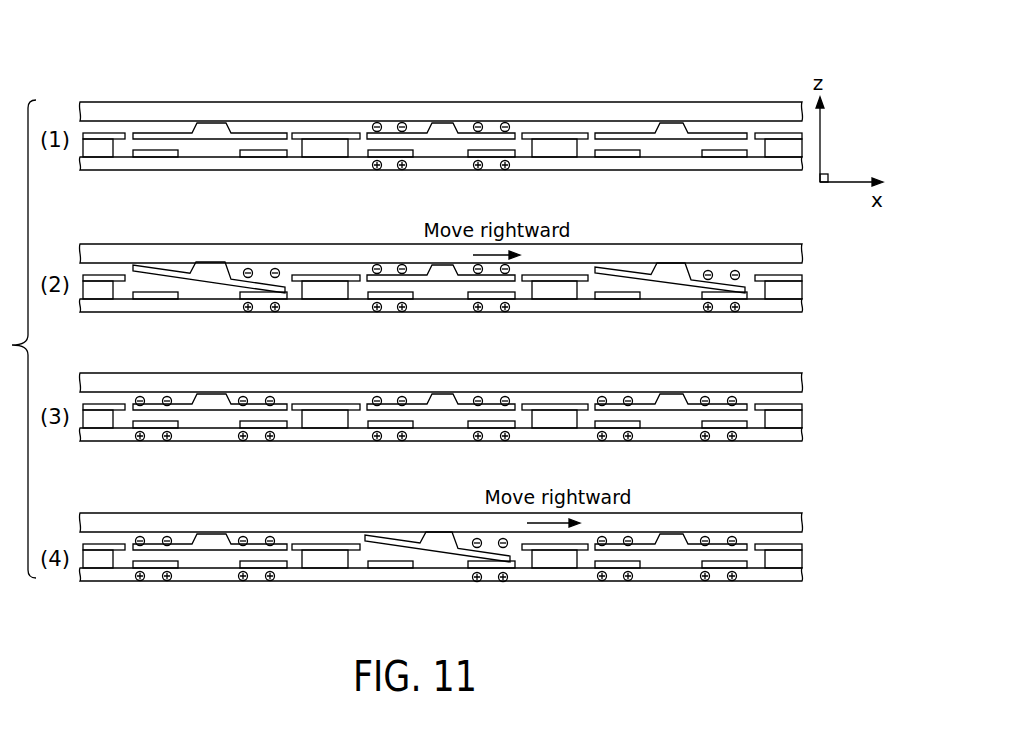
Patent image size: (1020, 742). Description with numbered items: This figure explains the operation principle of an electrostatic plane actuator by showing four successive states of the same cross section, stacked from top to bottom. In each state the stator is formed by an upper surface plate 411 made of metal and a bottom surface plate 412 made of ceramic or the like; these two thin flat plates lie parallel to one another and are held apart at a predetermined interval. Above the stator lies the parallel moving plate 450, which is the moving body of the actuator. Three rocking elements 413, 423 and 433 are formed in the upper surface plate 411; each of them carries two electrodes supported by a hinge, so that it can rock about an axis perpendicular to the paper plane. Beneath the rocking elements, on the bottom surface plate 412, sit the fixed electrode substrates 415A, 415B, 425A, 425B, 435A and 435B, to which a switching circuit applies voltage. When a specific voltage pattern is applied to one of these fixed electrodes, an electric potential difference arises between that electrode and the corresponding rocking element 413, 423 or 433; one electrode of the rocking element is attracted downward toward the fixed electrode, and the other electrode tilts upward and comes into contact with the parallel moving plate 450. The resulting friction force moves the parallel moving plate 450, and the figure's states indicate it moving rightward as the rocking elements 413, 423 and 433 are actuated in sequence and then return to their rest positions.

The upper surface plate 411 is at (107, 135).
The bottom surface plate 412 is at (107, 160).
The rocking element 413 is at (222, 116).
The electrode substrate 415A is at (156, 156).
The electrode substrate 415B is at (263, 156).
The rocking element 423 is at (460, 117).
The electrode substrate 425A is at (390, 157).
The electrode substrate 425B is at (494, 157).
The rocking element 433 is at (691, 115).
The electrode substrate 435A is at (614, 157).
The electrode substrate 435B is at (722, 157).
The parallel moving plate 450 is at (348, 104).